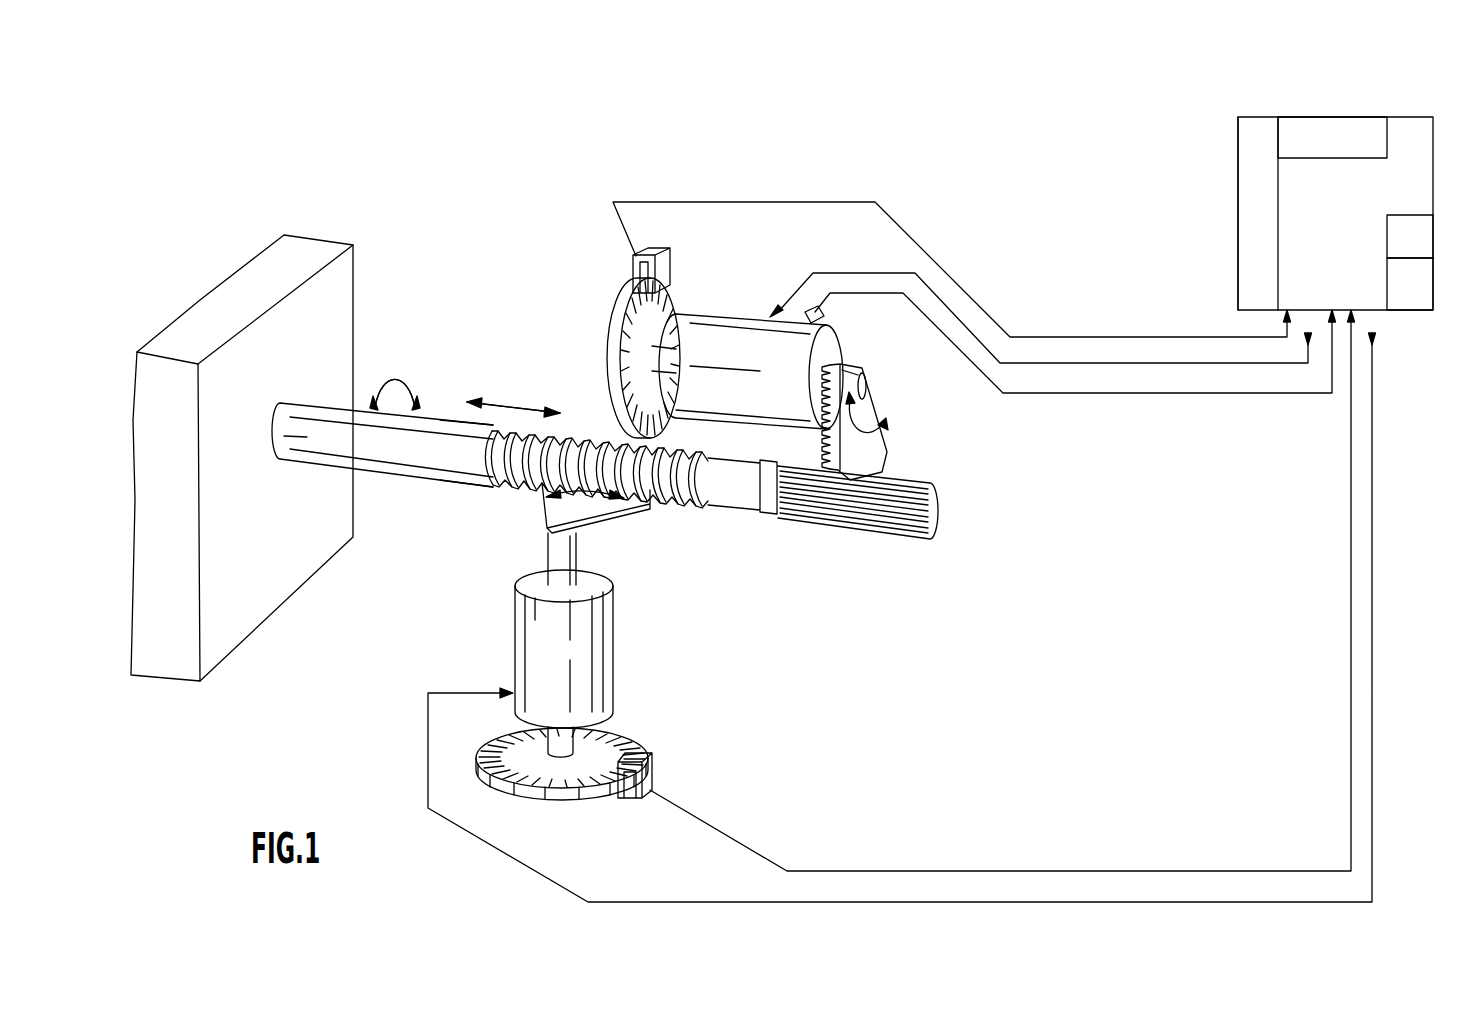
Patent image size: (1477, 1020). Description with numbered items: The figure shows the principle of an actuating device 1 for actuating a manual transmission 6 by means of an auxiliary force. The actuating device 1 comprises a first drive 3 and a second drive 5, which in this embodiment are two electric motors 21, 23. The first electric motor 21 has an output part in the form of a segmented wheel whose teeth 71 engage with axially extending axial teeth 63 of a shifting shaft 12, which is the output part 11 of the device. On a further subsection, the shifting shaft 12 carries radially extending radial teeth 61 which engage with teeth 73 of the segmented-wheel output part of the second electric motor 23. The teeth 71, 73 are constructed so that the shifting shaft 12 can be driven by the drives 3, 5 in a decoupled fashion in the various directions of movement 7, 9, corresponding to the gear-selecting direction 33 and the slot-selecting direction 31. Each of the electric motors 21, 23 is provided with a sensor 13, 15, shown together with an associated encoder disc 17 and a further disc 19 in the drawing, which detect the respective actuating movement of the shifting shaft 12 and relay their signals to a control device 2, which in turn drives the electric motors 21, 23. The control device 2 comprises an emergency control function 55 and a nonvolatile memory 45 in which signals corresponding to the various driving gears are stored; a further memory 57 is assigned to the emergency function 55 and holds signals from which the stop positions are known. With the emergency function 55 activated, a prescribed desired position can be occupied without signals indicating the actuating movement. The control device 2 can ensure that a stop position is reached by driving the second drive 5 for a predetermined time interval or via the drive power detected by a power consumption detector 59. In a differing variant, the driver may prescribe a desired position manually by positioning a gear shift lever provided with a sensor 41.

The actuating device 1 is at (500, 256).
The control device 2 is at (951, 484).
The first drive 3 is at (743, 347).
The second drive 5 is at (575, 663).
The manual transmission 6 is at (236, 630).
The direction of movement 7 is at (405, 372).
The direction of movement 9 is at (498, 400).
The output part 11 is at (481, 478).
The shifting shaft 12 is at (404, 472).
The sensor 13 is at (624, 262).
The sensor 15 is at (667, 756).
The first encoder disc 17 is at (690, 270).
The second sensor 19 is at (608, 812).
The first electric motor 21 is at (704, 318).
The second electric motor 23 is at (620, 677).
The slot-selecting direction 31 is at (520, 407).
The gear-selecting direction 33 is at (378, 370).
The sensor 41 is at (1245, 238).
The nonvolatile memory 45 is at (1327, 128).
The emergency control function 55 is at (1395, 270).
The memory 57 is at (1393, 230).
The power consumption detector 59 is at (828, 313).
The radial teeth 61 is at (583, 437).
The axial teeth 63 is at (889, 534).
The teeth 71 is at (887, 463).
The teeth 73 is at (632, 492).